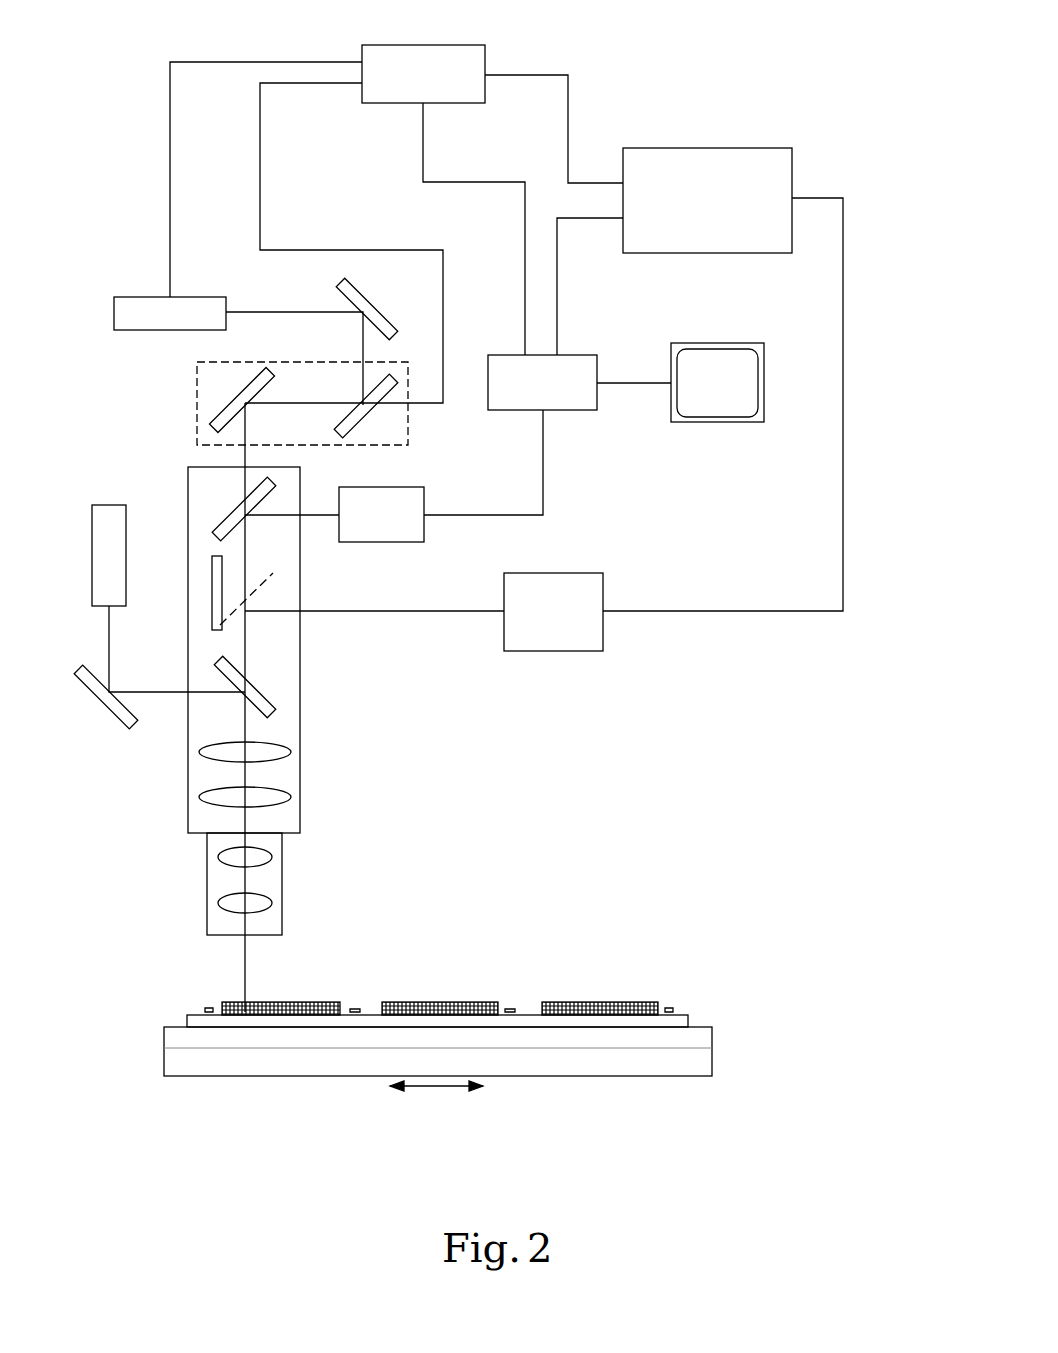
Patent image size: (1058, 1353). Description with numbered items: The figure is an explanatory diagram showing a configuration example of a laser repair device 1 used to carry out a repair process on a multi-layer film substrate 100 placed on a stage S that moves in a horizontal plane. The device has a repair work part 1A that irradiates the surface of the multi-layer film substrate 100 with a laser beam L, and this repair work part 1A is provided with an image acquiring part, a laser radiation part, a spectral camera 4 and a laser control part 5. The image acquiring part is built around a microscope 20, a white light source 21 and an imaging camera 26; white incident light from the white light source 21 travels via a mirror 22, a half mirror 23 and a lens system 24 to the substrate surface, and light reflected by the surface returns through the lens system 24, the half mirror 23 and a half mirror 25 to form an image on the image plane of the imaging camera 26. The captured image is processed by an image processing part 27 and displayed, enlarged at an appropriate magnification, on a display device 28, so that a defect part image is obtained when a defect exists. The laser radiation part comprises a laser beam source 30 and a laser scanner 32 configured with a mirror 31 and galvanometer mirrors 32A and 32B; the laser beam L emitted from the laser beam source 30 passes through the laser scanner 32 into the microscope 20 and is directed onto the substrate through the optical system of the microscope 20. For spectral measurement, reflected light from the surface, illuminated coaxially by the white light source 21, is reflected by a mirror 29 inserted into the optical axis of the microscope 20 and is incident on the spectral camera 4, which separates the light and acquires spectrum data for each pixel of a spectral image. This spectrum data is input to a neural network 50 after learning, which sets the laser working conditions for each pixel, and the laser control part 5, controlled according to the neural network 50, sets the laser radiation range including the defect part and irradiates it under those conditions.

The laser repair device 1 is at (685, 1122).
The repair work part 1A is at (542, 818).
The spectral camera 4 is at (590, 573).
The laser control part 5 is at (425, 45).
The microscope 20 is at (300, 742).
The white light source 21 is at (92, 505).
The mirror 22 is at (100, 700).
The half mirror 23 is at (268, 700).
The lens system 24 is at (212, 905).
The half mirror 25 is at (228, 518).
The imaging camera 26 is at (388, 545).
The image processing part 27 is at (590, 355).
The display device 28 is at (757, 343).
The mirror 29 is at (212, 588).
The laser beam source 30 is at (118, 297).
The mirror 31 is at (342, 292).
The laser scanner 32 is at (197, 430).
The galvanometer mirror 32A is at (232, 403).
The galvanometer mirror 32B is at (375, 405).
The neural network 50 is at (792, 148).
The multi-layer film substrate 100 is at (688, 1015).
The laser beam L is at (246, 967).
The stage S is at (712, 1047).